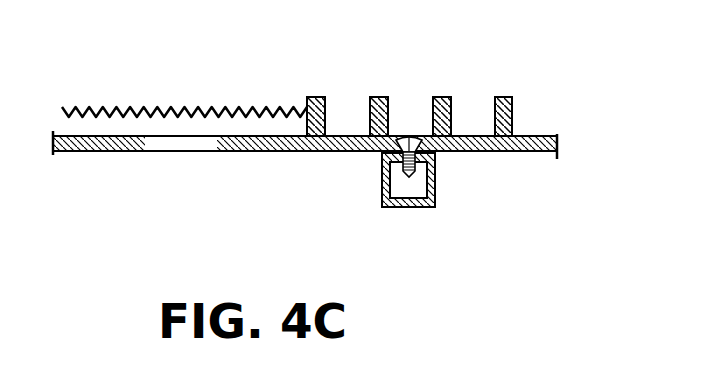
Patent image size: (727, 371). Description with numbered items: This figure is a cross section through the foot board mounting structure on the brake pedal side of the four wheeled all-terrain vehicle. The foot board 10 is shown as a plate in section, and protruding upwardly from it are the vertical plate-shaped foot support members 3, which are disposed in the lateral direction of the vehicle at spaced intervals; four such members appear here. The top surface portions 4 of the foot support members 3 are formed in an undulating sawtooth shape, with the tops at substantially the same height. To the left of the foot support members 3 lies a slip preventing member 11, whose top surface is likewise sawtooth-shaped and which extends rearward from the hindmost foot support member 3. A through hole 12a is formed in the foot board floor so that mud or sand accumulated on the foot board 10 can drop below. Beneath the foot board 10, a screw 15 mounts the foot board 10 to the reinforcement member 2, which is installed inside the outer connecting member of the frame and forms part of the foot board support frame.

The reinforcement member 2 is at (437, 182).
The foot support member 3 is at (317, 98).
The top surface portion 4 is at (503, 97).
The foot board 10 is at (268, 138).
The slip preventing member 11 is at (102, 108).
The through hole 12a is at (175, 143).
The screw 15 is at (408, 140).